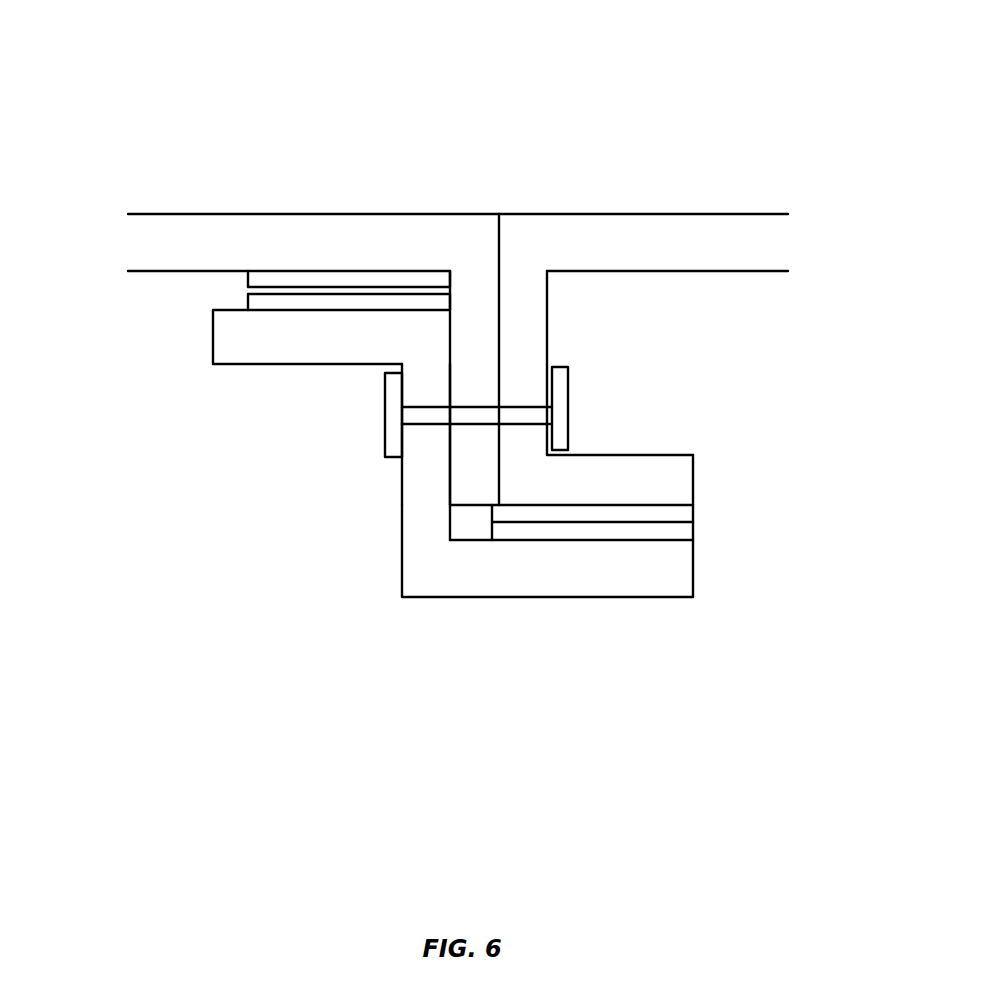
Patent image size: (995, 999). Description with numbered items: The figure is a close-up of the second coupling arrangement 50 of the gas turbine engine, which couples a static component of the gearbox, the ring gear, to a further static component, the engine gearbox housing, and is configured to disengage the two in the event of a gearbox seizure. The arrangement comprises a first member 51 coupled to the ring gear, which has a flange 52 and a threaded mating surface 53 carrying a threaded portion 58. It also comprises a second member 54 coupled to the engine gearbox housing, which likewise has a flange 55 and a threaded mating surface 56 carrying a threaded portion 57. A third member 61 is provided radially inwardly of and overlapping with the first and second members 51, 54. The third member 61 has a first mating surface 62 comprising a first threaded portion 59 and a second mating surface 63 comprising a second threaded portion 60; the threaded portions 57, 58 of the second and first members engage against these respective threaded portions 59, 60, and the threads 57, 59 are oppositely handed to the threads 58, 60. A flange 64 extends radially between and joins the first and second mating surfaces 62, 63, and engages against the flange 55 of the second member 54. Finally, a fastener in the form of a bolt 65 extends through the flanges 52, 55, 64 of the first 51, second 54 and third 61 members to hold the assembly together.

The second coupling arrangement 50 is at (496, 105).
The first member 51 is at (692, 225).
The flange 52 is at (540, 347).
The threaded mating surface 53 is at (643, 500).
The second member 54 is at (212, 226).
The flange 55 is at (478, 472).
The threaded mating surface 56 is at (308, 270).
The threaded portion 57 is at (330, 278).
The threaded portion 58 is at (693, 514).
The first threaded portion 59 is at (290, 302).
The second threaded portion 60 is at (693, 530).
The third member 61 is at (420, 462).
The first mating surface 62 is at (331, 319).
The second mating surface 63 is at (546, 569).
The flange 64 is at (413, 505).
The bolt 65 is at (500, 423).